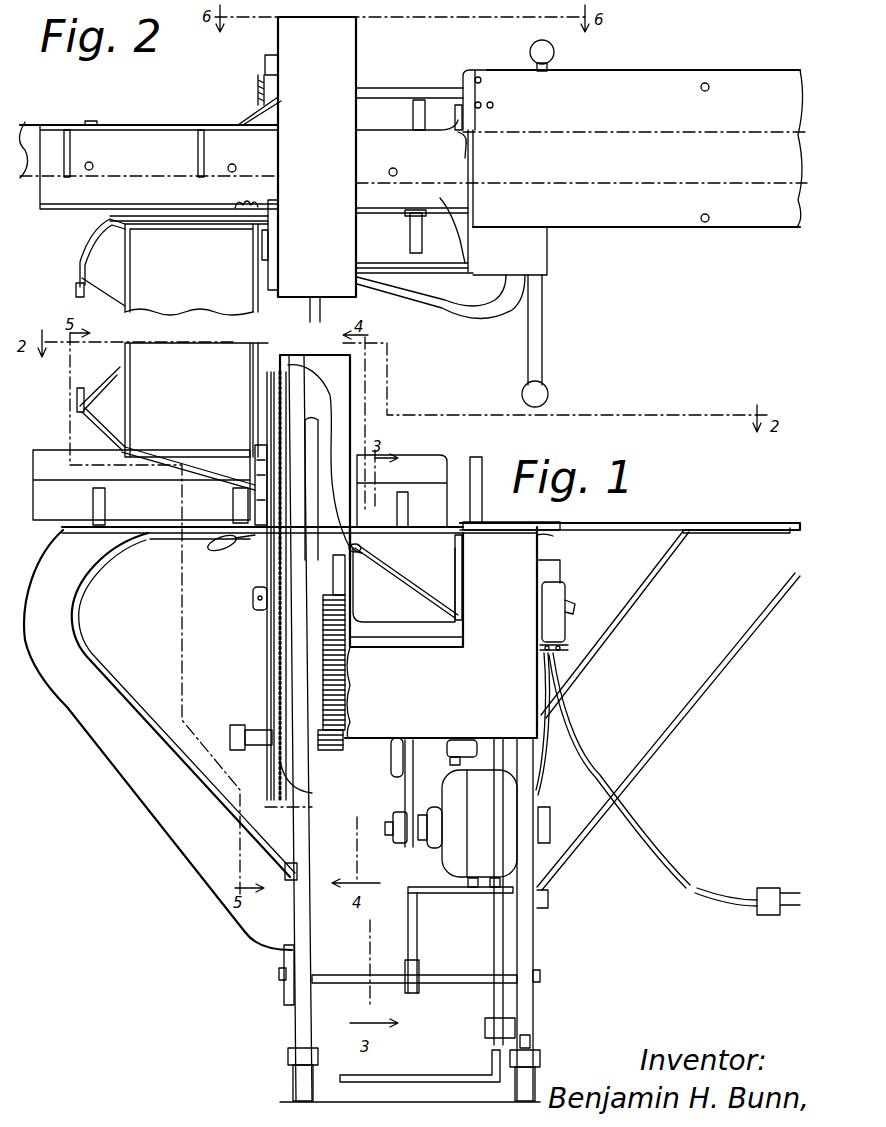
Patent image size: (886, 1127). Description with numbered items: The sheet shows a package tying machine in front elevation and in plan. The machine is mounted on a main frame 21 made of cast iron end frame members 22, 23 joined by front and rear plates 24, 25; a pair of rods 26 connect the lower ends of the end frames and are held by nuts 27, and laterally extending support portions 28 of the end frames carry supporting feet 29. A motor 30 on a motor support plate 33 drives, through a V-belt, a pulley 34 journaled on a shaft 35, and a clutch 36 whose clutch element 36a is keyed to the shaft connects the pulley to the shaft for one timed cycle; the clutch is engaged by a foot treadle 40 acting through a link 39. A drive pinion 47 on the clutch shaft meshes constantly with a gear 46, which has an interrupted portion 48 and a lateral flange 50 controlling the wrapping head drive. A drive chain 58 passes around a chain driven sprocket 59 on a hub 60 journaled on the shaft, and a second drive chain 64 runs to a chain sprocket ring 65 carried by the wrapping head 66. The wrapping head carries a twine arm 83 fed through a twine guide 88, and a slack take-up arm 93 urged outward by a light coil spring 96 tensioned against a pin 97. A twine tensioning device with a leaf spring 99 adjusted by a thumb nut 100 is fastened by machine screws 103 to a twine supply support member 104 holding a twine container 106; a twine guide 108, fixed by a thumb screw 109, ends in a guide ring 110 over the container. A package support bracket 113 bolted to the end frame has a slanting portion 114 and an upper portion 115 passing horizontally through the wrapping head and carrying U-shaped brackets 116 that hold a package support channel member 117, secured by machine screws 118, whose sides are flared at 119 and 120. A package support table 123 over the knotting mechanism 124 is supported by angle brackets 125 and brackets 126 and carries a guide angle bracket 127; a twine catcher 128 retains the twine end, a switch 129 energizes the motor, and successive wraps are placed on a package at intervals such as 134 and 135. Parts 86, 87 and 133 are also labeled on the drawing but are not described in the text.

In FIG. 1, the main frame 21 is at (553, 922).
In FIG. 1, the end frame member 22 is at (296, 962).
In FIG. 1, the end frame member 23 is at (534, 958).
In FIG. 2, the front plate 24 is at (437, 283).
In FIG. 1, the front plate 24 is at (512, 572).
In FIG. 2, the rear plate 25 is at (433, 88).
In FIG. 1, the rods 26 is at (440, 975).
In FIG. 1, the nuts 27 is at (279, 979).
In FIG. 2, the support portions 28 is at (308, 308).
In FIG. 1, the support portions 28 is at (288, 1056).
In FIG. 1, the supporting feet 29 is at (293, 1080).
In FIG. 1, the motor 30 is at (447, 858).
In FIG. 1, the motor support plate 33 is at (428, 889).
In FIG. 2, the pulley 34 is at (412, 113).
In FIG. 1, the pulley 34 is at (404, 790).
In FIG. 1, the shaft 35 is at (388, 765).
In FIG. 1, the clutch 36 is at (420, 783).
In FIG. 1, the clutch element 36a is at (433, 814).
In FIG. 1, the link 39 is at (494, 931).
In FIG. 2, the foot treadle 40 is at (464, 302).
In FIG. 1, the foot treadle 40 is at (400, 1075).
In FIG. 1, the gear 46 is at (345, 693).
In FIG. 1, the drive pinion 47 is at (331, 748).
In FIG. 1, the interrupted portion 48 is at (338, 592).
In FIG. 1, the flange 50 is at (268, 579).
In FIG. 1, the drive chain 58 is at (282, 656).
In FIG. 1, the chain driven sprocket 59 is at (290, 785).
In FIG. 1, the hub 60 is at (258, 750).
In FIG. 1, the drive chain 64 is at (270, 673).
In FIG. 1, the chain sprocket ring 65 is at (290, 358).
In FIG. 1, the wrapping head 66 is at (300, 380).
In FIG. 1, the twine arm 83 is at (360, 579).
In FIG. 1, the pivot 86 is at (363, 552).
In FIG. 1, the bracket 87 is at (362, 621).
In FIG. 1, the twine guide 88 is at (361, 549).
In FIG. 2, the slack take-up arm 93 is at (243, 117).
In FIG. 1, the slack take-up arm 93 is at (222, 550).
In FIG. 2, the coil spring 96 is at (257, 90).
In FIG. 2, the pin 97 is at (265, 65).
In FIG. 1, the leaf spring 99 is at (248, 500).
In FIG. 1, the thumb nut 100 is at (258, 482).
In FIG. 1, the machine screws 103 is at (257, 460).
In FIG. 2, the twine supply support member 104 is at (268, 268).
In FIG. 2, the twine container 106 is at (140, 247).
In FIG. 1, the twine container 106 is at (181, 357).
In FIG. 2, the twine guide 108 is at (102, 232).
In FIG. 1, the twine guide 108 is at (120, 395).
In FIG. 2, the thumb screw 109 is at (245, 203).
In FIG. 2, the guide ring 110 is at (76, 287).
In FIG. 1, the guide ring 110 is at (77, 398).
In FIG. 1, the package support bracket 113 is at (140, 676).
In FIG. 1, the slanting portion 114 is at (75, 720).
In FIG. 1, the upper portion 115 is at (170, 538).
In FIG. 2, the U-shaped brackets 116 is at (94, 124).
In FIG. 1, the U-shaped brackets 116 is at (101, 503).
In FIG. 1, the package support channel member 117 is at (48, 458).
In FIG. 2, the machine screws 118 is at (93, 166).
In FIG. 2, the flared side 119 is at (446, 133).
In FIG. 2, the flared side 120 is at (440, 198).
In FIG. 1, the flared side 120 is at (452, 519).
In FIG. 2, the package support table 123 is at (620, 218).
In FIG. 1, the package support table 123 is at (643, 523).
In FIG. 2, the knotting mechanism 124 is at (466, 141).
In FIG. 1, the angle brackets 125 is at (620, 628).
In FIG. 1, the brackets 126 is at (700, 700).
In FIG. 2, the angle bracket 127 is at (482, 92).
In FIG. 1, the angle bracket 127 is at (476, 457).
In FIG. 2, the twine catcher 128 is at (456, 112).
In FIG. 1, the twine catcher 128 is at (457, 575).
In FIG. 1, the switch 129 is at (575, 607).
In FIG. 2, the rod 133 is at (50, 178).
In FIG. 2, the wrap 134 is at (200, 142).
In FIG. 2, the wrap 135 is at (64, 140).